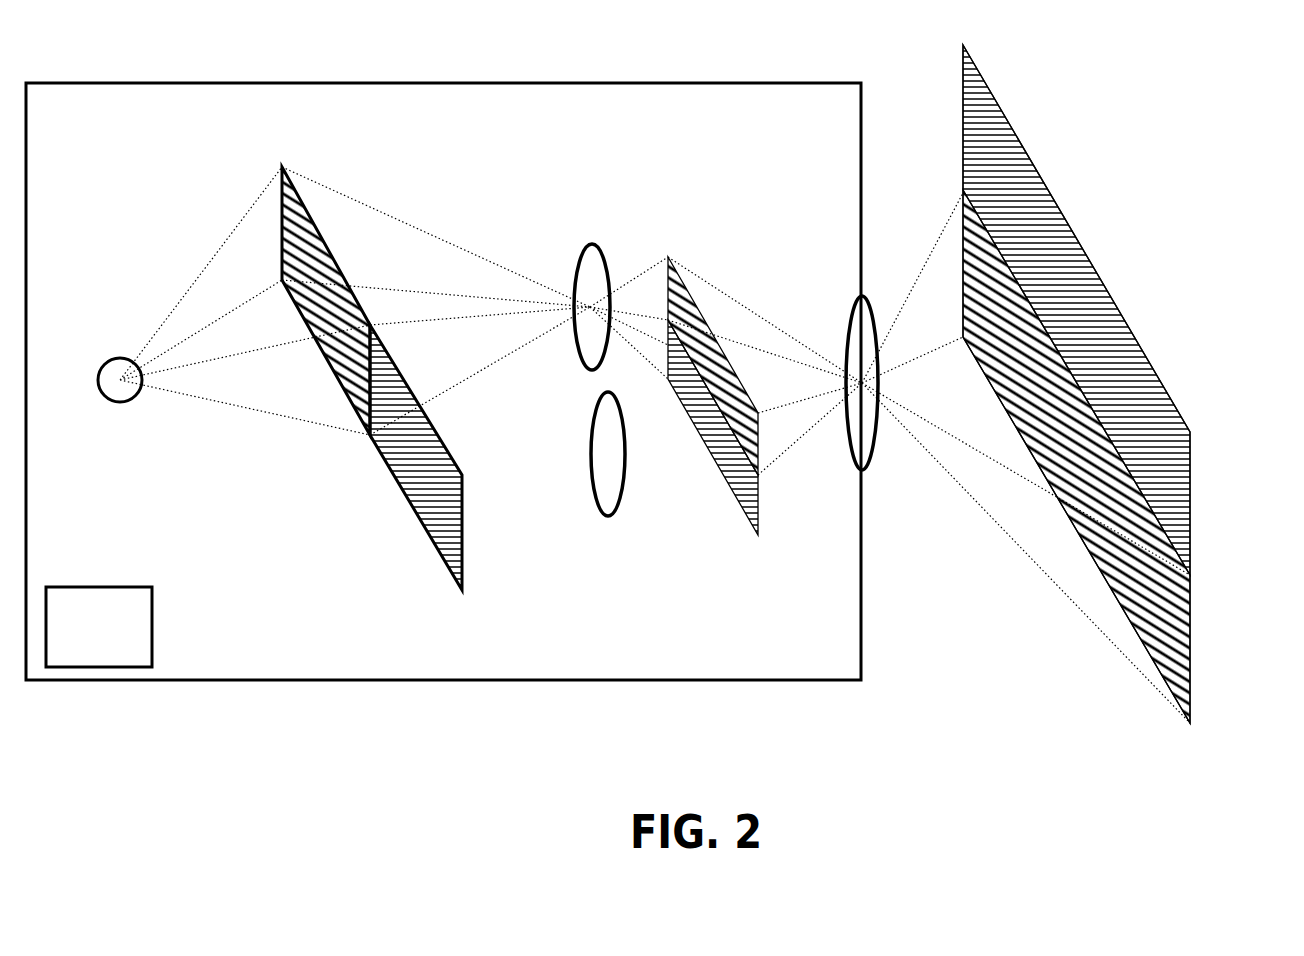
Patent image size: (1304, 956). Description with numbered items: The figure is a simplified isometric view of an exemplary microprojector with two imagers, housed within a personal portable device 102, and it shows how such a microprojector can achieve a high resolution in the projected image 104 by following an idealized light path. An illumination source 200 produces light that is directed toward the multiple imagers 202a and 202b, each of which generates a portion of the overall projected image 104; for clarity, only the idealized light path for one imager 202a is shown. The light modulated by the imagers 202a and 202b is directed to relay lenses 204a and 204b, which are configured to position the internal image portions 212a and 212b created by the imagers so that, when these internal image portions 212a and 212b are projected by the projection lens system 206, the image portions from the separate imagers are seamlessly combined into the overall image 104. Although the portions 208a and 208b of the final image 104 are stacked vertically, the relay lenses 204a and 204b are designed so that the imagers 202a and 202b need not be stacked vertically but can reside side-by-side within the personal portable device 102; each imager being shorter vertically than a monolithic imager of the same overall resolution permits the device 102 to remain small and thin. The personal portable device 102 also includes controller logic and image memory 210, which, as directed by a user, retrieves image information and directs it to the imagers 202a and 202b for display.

The personal portable device 102 is at (88, 123).
The projected image 104 is at (1000, 90).
The illumination source 200 is at (120, 410).
The imager 202a is at (282, 163).
The imager 202b is at (460, 598).
The relay lens 204a is at (592, 240).
The relay lens 204b is at (608, 520).
The projection lens system 206 is at (842, 311).
The portion of the final image 208a is at (1198, 657).
The portion of the final image 208b is at (1198, 515).
The controller logic and image memory 210 is at (128, 643).
The internal image portion 212a is at (668, 255).
The internal image portion 212b is at (758, 540).